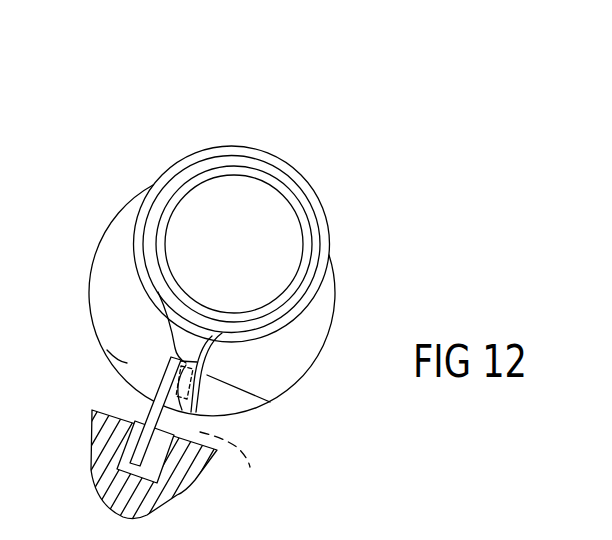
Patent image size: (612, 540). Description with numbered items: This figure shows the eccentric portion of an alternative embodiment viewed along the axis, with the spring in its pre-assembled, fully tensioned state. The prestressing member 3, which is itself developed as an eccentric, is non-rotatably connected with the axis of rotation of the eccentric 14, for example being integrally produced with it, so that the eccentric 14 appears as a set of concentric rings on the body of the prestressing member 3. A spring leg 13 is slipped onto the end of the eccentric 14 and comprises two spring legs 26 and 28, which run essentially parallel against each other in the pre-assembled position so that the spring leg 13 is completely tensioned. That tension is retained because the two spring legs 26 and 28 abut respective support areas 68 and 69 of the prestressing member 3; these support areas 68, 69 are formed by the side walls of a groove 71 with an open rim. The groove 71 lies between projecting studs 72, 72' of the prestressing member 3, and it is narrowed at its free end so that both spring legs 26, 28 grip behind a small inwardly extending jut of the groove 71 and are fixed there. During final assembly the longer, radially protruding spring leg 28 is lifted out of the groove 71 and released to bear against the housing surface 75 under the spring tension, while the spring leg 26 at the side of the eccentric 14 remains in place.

The spring leg 13 is at (193, 135).
The eccentric 14 is at (280, 217).
The prestressing member 3 is at (310, 320).
The support area 69 is at (185, 362).
The projecting stud 72 is at (110, 336).
The projecting stud 72' is at (262, 407).
The groove 71 is at (218, 404).
The spring leg 26 is at (207, 365).
The spring leg 28 is at (157, 398).
The housing surface 75 is at (127, 450).
The support area 68 is at (231, 464).